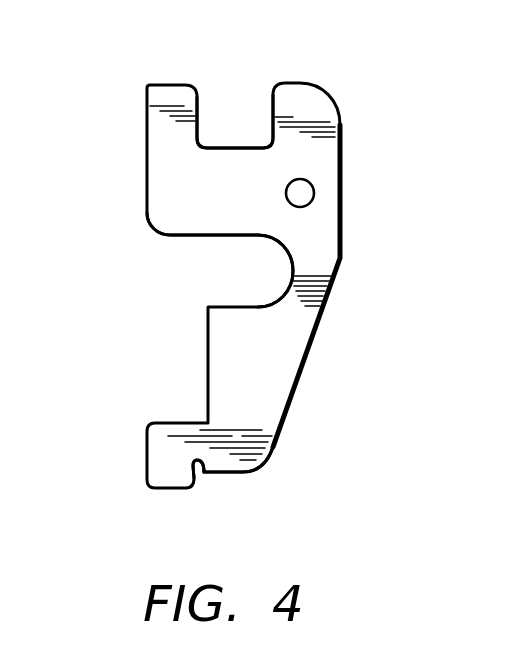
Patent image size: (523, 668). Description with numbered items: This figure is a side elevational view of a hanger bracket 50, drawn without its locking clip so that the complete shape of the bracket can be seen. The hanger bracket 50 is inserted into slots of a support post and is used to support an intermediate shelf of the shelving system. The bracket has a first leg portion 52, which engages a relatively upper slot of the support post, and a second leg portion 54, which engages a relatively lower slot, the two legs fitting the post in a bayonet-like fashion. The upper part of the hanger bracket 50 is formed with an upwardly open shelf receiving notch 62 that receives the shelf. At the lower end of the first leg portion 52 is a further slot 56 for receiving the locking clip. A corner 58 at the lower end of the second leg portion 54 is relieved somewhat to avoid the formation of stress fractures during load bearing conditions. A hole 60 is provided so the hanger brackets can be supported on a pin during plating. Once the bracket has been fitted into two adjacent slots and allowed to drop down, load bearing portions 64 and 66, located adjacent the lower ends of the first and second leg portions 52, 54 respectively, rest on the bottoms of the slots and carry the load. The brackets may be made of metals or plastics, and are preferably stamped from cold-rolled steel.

The hanger bracket 50 is at (352, 137).
The first leg portion 52 is at (138, 72).
The second leg portion 54 is at (137, 410).
The slot 56 is at (263, 272).
The corner 58 is at (196, 452).
The hole 60 is at (314, 194).
The shelf receiving notch 62 is at (267, 73).
The load bearing portion 64 is at (187, 240).
The load bearing portion 66 is at (268, 474).